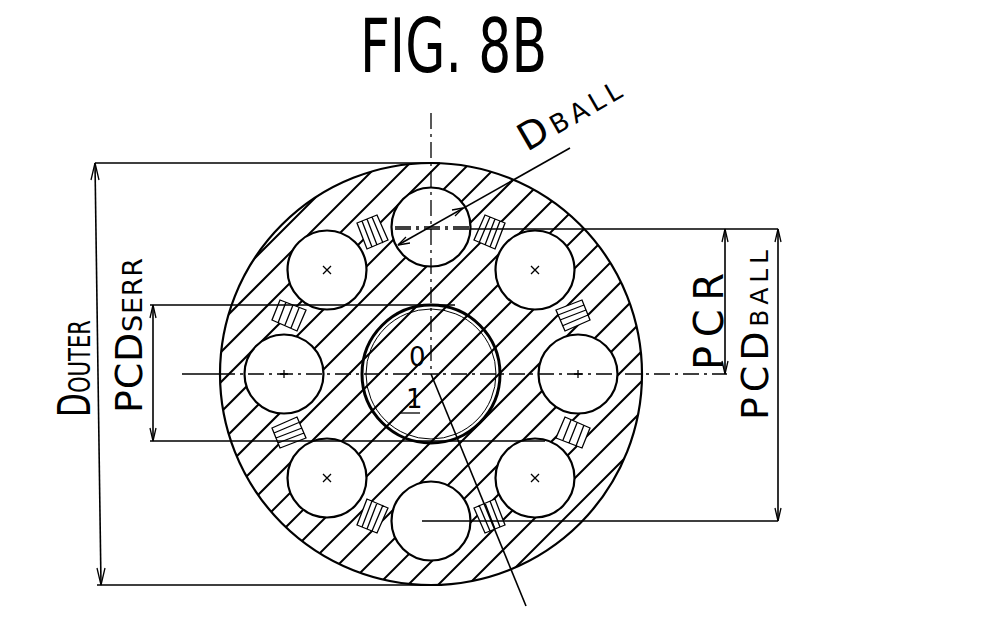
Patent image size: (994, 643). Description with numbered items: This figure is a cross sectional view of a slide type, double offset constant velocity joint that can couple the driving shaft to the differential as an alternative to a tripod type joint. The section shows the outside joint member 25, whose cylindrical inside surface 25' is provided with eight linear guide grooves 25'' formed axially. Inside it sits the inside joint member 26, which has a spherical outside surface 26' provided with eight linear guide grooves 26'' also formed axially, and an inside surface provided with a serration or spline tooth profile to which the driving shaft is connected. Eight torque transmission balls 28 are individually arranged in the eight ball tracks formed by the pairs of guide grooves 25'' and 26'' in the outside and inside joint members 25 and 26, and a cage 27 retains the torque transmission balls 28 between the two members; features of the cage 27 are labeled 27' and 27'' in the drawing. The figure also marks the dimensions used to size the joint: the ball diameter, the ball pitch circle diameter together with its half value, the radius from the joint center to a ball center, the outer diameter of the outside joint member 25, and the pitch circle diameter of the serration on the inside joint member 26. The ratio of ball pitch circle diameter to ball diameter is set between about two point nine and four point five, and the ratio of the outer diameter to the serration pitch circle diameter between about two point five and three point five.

The outside joint member 25 is at (325, 346).
The cylindrical inside surface 25' is at (278, 250).
The linear guide grooves 25'' is at (238, 282).
The inside joint member 26 is at (565, 269).
The spherical outside surface 26' is at (625, 308).
The linear guide grooves 26'' is at (595, 270).
The cage 27 is at (561, 479).
The serration pocket 27' is at (625, 447).
The ball in ball pocket 27'' is at (596, 481).
The torque transmission balls 28 is at (395, 203).